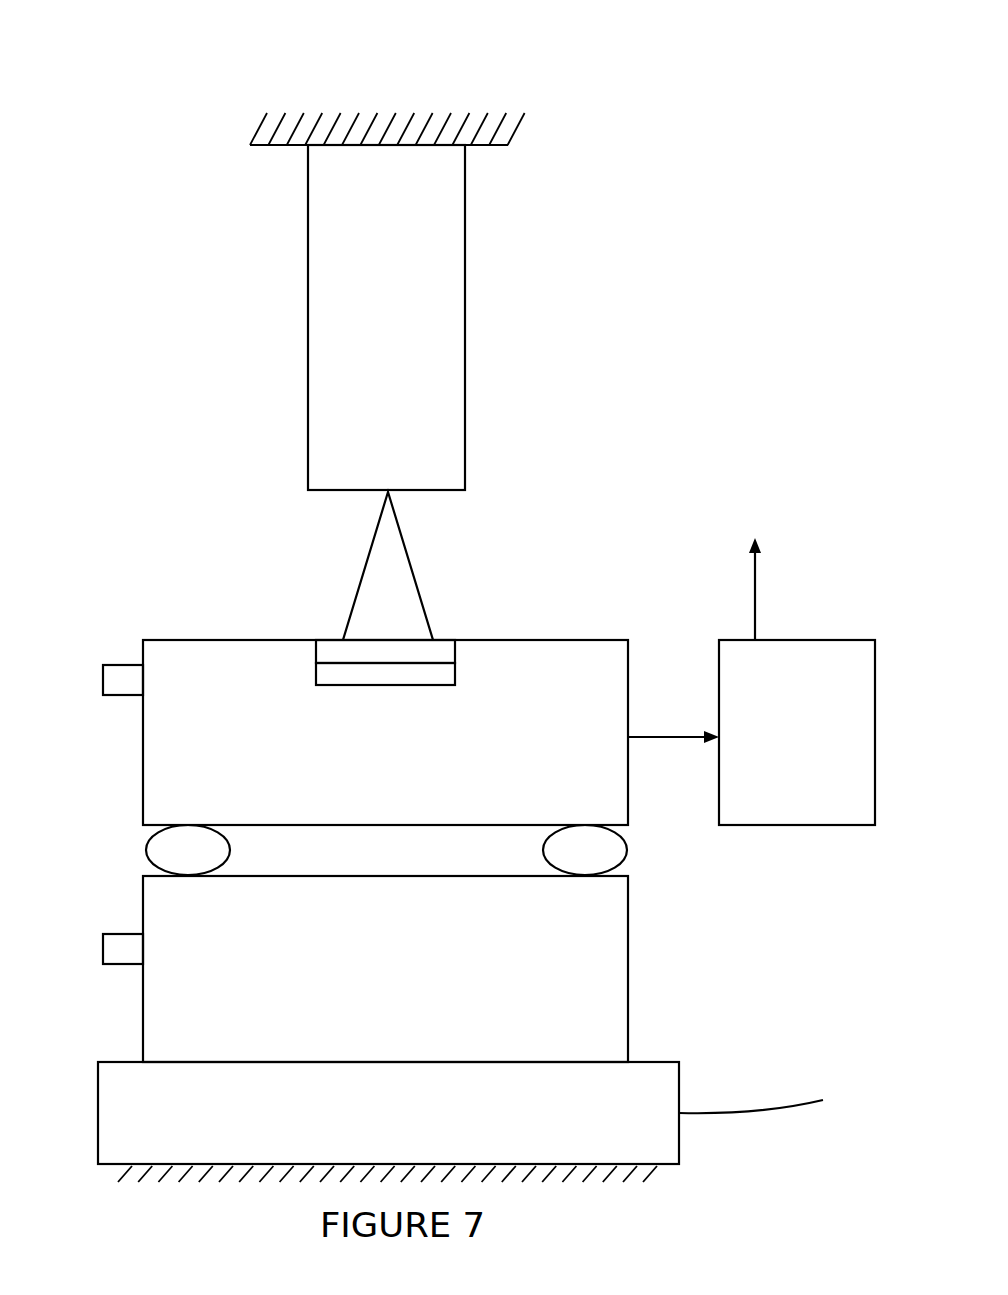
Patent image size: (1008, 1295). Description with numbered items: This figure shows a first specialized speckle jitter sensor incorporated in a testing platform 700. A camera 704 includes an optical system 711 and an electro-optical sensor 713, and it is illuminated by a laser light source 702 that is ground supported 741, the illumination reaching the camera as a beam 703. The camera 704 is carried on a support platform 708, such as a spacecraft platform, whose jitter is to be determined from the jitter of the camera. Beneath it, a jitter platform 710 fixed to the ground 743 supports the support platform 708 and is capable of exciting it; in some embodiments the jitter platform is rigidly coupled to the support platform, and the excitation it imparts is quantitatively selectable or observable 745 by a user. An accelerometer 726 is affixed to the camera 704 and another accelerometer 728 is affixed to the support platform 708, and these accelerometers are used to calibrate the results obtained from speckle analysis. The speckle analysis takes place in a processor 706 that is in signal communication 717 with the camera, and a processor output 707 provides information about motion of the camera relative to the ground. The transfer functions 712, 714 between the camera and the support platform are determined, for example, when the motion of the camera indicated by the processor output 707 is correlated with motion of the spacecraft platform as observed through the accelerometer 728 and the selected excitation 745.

The testing platform 700 is at (483, 58).
The ground support 741 is at (494, 147).
The laser light source 702 is at (443, 481).
The laser beam 703 is at (410, 560).
The camera 704 is at (608, 671).
The optical system 711 is at (322, 653).
The electro-optical sensor 713 is at (310, 677).
The camera accelerometer 726 is at (122, 697).
The transfer function between camera and support platform 712 is at (167, 862).
The transfer function between camera and support platform 714 is at (564, 862).
The processor 706 is at (861, 817).
The signal communication 717 is at (643, 737).
The processor output 707 is at (755, 575).
The support platform 708 is at (608, 1052).
The support platform accelerometer 728 is at (122, 966).
The jitter platform 710 is at (663, 1159).
The selectable or observable excitation 745 is at (703, 1111).
The ground 743 is at (650, 1171).